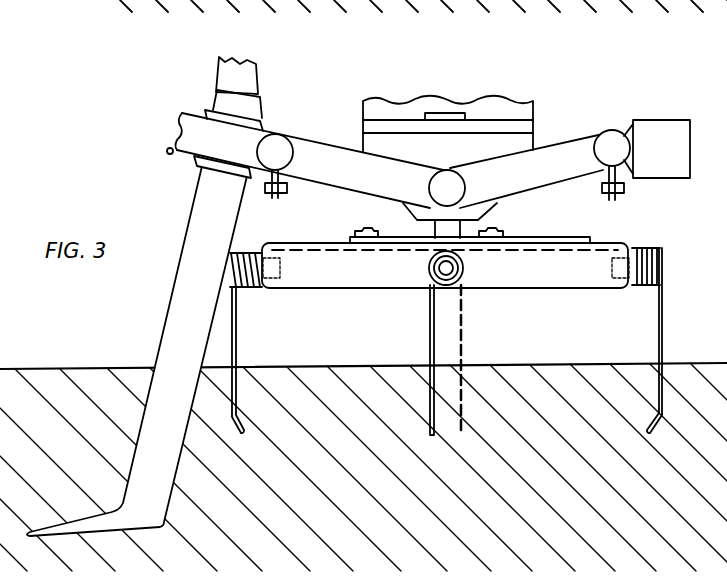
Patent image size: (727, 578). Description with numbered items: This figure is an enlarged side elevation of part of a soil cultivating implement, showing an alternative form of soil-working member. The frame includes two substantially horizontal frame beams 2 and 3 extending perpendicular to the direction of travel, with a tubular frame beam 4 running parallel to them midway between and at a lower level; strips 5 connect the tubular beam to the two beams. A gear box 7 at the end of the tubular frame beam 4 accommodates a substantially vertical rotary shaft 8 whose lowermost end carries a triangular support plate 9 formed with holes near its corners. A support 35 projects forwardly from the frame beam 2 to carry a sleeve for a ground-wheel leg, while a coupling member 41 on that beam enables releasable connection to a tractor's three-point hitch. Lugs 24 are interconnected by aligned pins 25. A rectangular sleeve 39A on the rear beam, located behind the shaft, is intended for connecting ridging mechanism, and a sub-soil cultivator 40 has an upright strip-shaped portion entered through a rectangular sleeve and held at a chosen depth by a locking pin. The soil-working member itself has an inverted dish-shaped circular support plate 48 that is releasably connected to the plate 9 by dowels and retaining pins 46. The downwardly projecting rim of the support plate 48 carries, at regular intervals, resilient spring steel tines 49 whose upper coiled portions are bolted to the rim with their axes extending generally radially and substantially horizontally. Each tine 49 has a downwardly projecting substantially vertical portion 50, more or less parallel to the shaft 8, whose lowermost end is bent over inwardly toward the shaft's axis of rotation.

The frame beam 2 is at (283, 155).
The frame beam 3 is at (609, 143).
The tubular frame beam 4 is at (452, 185).
The strip 5 is at (303, 147).
The gear box 7 is at (530, 125).
The rotary shaft 8 is at (438, 223).
The support plate 9 is at (407, 247).
The lug 24 is at (276, 207).
The pin 25 is at (268, 189).
The support 35 is at (185, 120).
The rectangular sleeve 39A is at (660, 127).
The sub-soil cultivator 40 is at (200, 201).
The coupling member 41 is at (222, 78).
The retaining pin 46 is at (375, 229).
The support plate 48 is at (370, 285).
The tine 49 is at (665, 317).
The vertical portion 50 is at (236, 325).